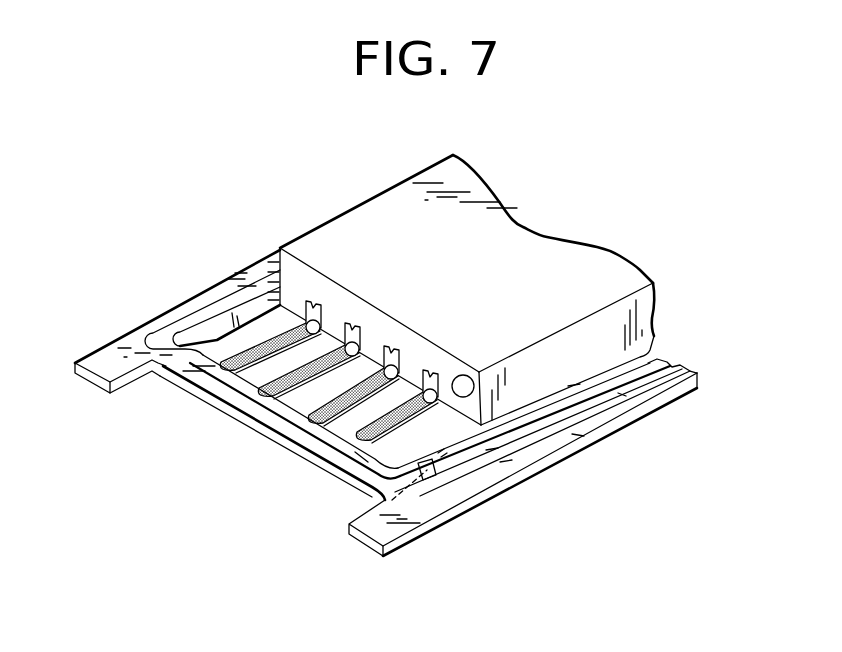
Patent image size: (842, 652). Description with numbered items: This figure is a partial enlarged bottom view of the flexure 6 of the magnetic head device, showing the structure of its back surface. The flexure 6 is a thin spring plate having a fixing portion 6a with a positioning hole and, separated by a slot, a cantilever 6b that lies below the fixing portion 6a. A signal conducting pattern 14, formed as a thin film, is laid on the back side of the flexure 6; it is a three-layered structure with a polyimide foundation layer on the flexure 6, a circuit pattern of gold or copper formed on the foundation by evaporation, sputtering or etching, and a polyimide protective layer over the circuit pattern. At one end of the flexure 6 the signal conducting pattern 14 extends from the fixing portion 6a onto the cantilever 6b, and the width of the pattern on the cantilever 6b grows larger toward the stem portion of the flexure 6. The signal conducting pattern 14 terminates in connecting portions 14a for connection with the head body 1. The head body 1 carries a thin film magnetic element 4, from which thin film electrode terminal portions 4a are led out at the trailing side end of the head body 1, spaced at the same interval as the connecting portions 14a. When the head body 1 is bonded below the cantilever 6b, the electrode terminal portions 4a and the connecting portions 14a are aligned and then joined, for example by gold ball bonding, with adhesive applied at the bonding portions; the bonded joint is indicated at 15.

The head body 1 is at (563, 257).
The thin film magnetic element 4 is at (470, 377).
The electrode terminal portions 4a is at (430, 370).
The flexure 6 is at (479, 519).
The fixing portion 6a is at (387, 531).
The cantilever 6b is at (357, 480).
The signal conducting pattern 14 is at (223, 313).
The connecting portions 14a is at (375, 437).
The connection 15 is at (362, 457).